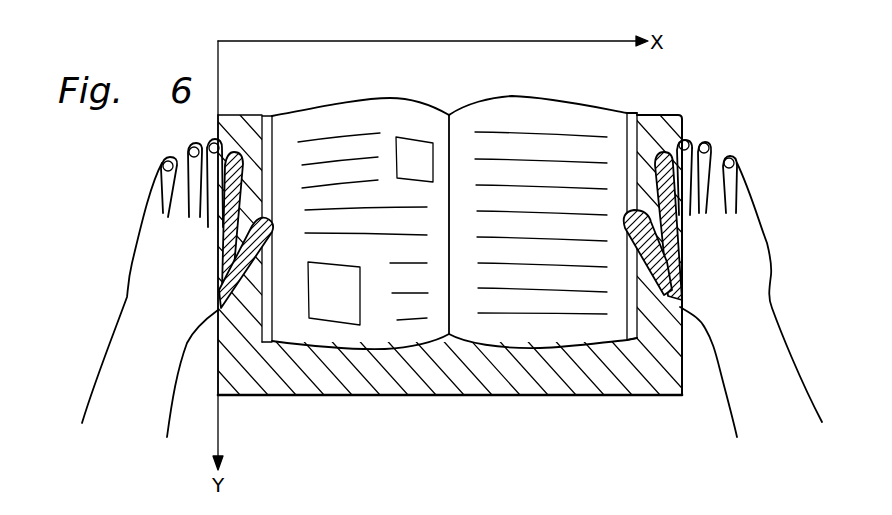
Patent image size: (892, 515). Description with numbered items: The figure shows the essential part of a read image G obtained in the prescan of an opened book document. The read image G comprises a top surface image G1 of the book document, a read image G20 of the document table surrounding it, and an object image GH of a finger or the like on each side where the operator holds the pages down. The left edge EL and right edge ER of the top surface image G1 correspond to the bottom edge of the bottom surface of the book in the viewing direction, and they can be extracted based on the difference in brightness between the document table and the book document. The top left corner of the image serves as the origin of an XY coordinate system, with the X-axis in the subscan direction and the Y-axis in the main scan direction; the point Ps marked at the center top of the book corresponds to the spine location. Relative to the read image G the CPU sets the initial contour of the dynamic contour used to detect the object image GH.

The read image G is at (674, 94).
The top surface image G1 is at (498, 110).
The read image of document table G20 is at (487, 390).
The object image GH is at (222, 277).
The left edge EL is at (248, 328).
The right edge ER is at (642, 317).
The spine top point Ps is at (448, 113).